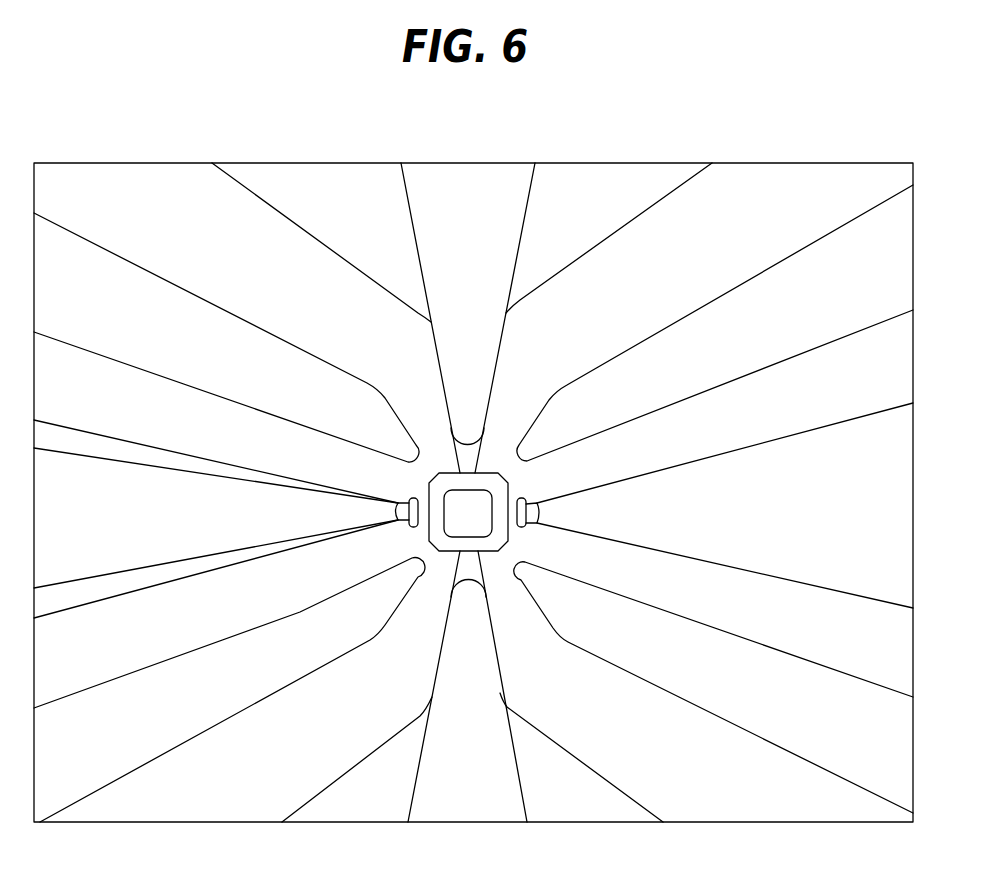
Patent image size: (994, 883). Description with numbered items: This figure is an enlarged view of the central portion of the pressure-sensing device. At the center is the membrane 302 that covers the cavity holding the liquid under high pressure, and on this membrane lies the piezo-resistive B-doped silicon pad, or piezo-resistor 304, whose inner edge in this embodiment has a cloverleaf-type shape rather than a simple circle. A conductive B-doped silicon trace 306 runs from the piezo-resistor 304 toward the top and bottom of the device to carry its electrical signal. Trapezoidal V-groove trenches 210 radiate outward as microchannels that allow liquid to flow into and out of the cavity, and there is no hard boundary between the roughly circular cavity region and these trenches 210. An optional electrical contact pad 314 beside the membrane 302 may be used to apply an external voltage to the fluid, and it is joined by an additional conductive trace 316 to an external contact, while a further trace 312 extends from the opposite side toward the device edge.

The trenches 210 is at (190, 232).
The membrane 302 is at (482, 522).
The piezo-resistive pad 304 is at (498, 495).
The conductive trace 306 is at (473, 362).
The raised areas of oxide 312 is at (610, 612).
The electrical contact pad 314 is at (402, 495).
The additional conductive trace 316 is at (227, 525).